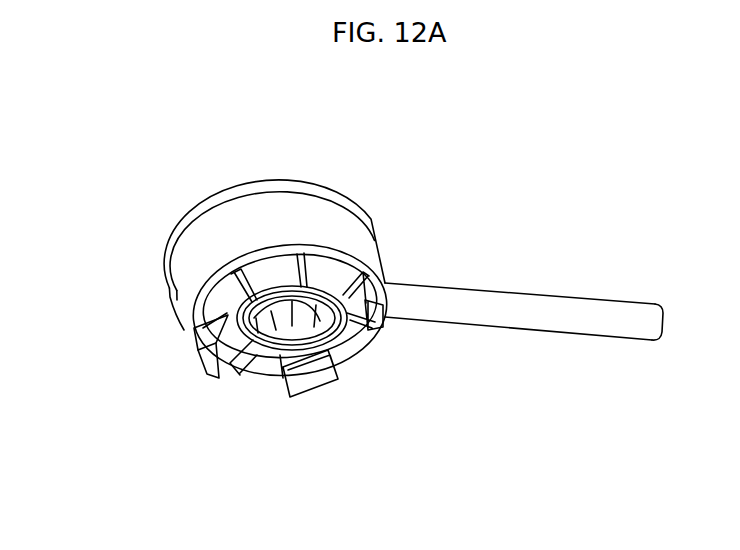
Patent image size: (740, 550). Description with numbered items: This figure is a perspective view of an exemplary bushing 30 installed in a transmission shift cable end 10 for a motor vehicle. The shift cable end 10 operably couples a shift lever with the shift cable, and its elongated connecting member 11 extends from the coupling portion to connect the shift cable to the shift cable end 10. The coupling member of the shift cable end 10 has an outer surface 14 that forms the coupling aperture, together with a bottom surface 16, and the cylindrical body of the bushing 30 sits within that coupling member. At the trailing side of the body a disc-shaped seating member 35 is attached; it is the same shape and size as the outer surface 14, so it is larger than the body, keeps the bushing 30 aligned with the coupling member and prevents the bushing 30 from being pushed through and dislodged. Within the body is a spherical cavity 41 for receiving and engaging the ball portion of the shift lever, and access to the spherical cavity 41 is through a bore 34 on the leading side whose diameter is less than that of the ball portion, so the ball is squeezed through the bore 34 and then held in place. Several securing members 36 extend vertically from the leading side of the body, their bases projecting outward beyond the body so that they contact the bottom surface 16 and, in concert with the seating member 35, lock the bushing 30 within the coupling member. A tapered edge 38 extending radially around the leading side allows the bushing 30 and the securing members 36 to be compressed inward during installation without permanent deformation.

The shift cable end 10 is at (442, 257).
The connecting member 11 is at (590, 318).
The outer surface 14 is at (187, 280).
The bottom surface 16 is at (197, 308).
The bushing 30 is at (195, 198).
The bore 34 is at (290, 323).
The seating member 35 is at (280, 183).
The securing members 36 is at (322, 384).
The tapered edge 38 is at (225, 313).
The spherical cavity 41 is at (272, 320).